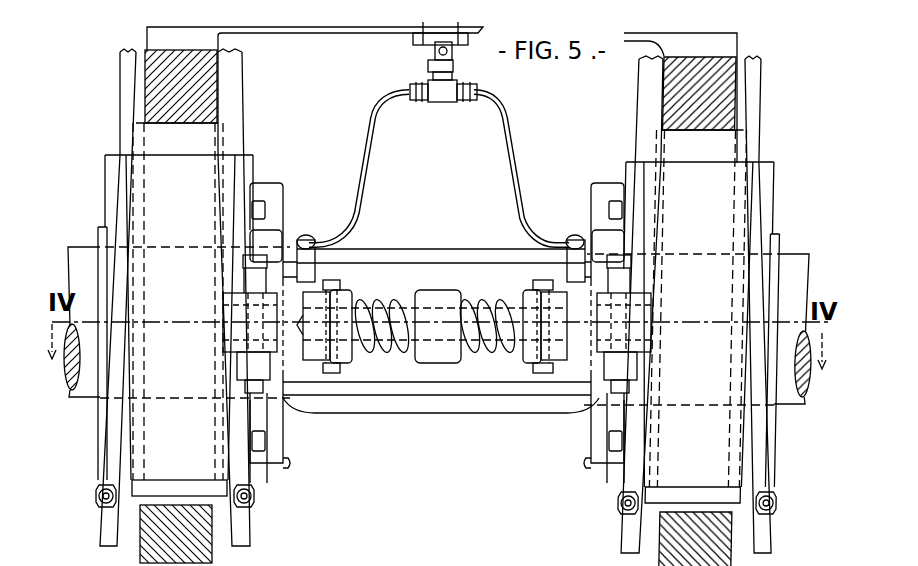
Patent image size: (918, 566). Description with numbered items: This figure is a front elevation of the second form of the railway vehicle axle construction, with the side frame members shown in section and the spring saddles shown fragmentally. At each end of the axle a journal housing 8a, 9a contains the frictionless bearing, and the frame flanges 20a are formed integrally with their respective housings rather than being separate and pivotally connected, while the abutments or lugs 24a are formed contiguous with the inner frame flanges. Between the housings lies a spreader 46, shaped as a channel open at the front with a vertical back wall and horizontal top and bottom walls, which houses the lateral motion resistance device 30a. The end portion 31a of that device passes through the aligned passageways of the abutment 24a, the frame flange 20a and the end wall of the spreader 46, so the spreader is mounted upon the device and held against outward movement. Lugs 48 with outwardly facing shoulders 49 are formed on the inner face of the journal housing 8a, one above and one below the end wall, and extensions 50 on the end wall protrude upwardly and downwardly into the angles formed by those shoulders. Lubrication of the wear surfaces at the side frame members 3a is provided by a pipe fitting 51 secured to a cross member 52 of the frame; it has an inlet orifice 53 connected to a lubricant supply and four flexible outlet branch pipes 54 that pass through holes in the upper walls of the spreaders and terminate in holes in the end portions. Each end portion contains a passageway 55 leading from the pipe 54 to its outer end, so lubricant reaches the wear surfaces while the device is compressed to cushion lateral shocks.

The side frame member 3a is at (203, 88).
The journal housing 8a is at (125, 194).
The journal housing 9a is at (762, 196).
The frame flange 20a is at (108, 470).
The abutment or lug 24a is at (245, 369).
The lateral motion resistance device 30a is at (454, 337).
The end portion 31a is at (343, 353).
The spreader 46 is at (391, 262).
The lug 48 is at (264, 463).
The outwardly facing shoulder 49 is at (281, 466).
The extension 50 is at (290, 206).
The pipe fitting 51 is at (428, 83).
The cross member 52 is at (340, 34).
The inlet orifice 53 is at (452, 52).
The outlet branch pipe 54 is at (503, 143).
The passageway 55 is at (232, 316).